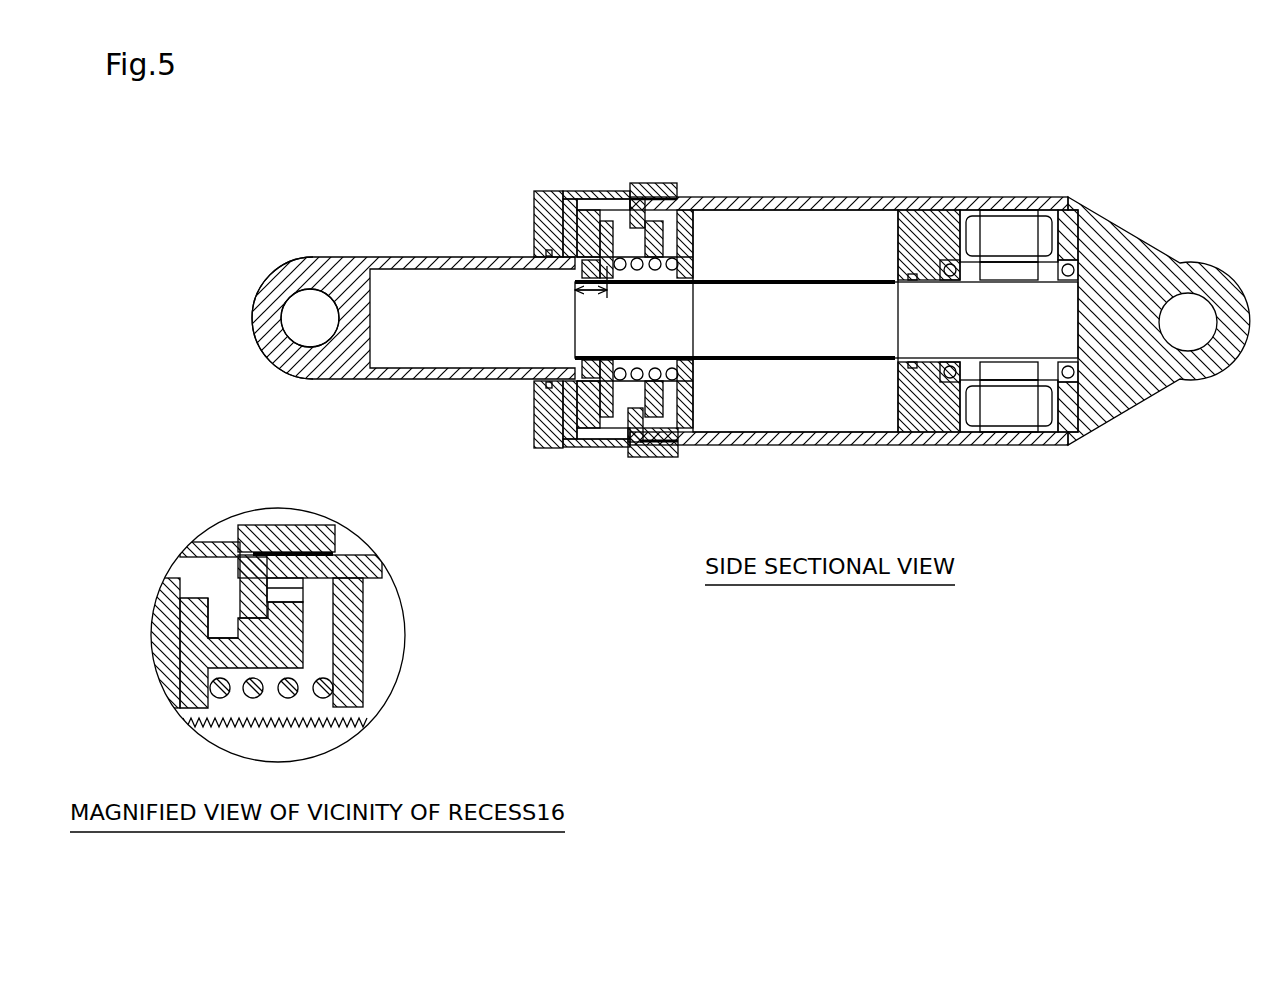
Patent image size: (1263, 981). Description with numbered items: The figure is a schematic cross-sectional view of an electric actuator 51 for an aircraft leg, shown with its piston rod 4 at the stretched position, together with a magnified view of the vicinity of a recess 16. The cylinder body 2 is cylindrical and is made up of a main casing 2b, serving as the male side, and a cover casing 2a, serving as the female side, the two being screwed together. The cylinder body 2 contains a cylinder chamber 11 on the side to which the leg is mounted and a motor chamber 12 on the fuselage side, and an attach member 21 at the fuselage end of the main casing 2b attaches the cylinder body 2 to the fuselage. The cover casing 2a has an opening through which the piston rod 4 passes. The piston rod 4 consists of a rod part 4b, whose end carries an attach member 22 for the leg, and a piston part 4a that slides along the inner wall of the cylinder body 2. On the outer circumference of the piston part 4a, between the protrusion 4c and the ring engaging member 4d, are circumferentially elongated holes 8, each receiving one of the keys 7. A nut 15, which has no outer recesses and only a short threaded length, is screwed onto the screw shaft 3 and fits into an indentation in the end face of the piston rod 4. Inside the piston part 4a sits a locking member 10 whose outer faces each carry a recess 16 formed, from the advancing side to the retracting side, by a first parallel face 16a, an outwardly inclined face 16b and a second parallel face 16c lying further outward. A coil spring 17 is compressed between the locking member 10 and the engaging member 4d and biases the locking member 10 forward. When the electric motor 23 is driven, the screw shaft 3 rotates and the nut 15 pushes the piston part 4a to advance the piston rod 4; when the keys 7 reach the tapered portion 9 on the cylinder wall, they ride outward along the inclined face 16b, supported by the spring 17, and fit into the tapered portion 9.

The cylinder body 2 is at (808, 190).
The cover casing 2a is at (585, 192).
The main casing 2b is at (928, 196).
The screw shaft 3 is at (808, 340).
The piston rod 4 is at (445, 390).
The piston part 4a is at (593, 430).
The rod part 4b is at (333, 262).
The protrusion 4c is at (568, 448).
The engaging member 4d is at (685, 237).
The keys 7 is at (628, 185).
The holes 8 is at (645, 218).
The tapered portion 9 is at (675, 252).
The locking member 10 is at (663, 403).
The cylinder chamber 11 is at (803, 255).
The motor chamber 12 is at (1055, 213).
The nut 15 is at (535, 215).
The recess 16 is at (625, 452).
The first parallel face 16a is at (207, 602).
The inclined face 16b is at (237, 592).
The second parallel face 16c is at (243, 578).
The spring 17 is at (598, 262).
The attach member 21 is at (1185, 305).
The attach member 22 is at (305, 312).
The electric motor 23 is at (1015, 222).
The electric actuator 51 is at (670, 419).